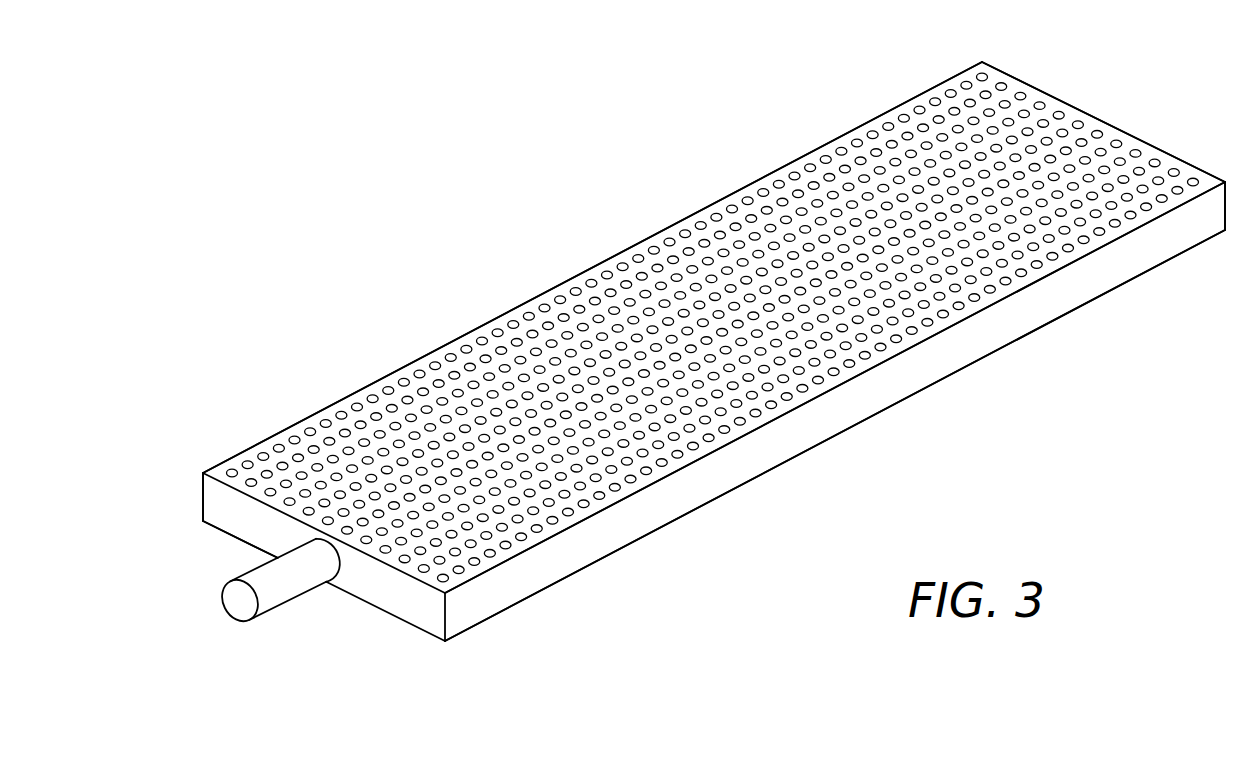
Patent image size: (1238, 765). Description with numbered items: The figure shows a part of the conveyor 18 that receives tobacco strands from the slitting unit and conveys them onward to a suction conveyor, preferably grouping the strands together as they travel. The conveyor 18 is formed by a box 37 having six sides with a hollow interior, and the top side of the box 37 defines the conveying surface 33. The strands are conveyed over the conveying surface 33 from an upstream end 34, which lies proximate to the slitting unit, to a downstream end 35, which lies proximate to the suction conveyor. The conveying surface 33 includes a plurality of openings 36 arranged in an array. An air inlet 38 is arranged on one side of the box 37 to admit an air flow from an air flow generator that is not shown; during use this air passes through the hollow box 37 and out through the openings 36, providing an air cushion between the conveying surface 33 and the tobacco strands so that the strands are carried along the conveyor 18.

The conveyor 18 is at (414, 254).
The conveying surface 33 is at (688, 218).
The upstream end 34 is at (212, 501).
The downstream end 35 is at (1088, 112).
The openings 36 is at (908, 135).
The box 37 is at (1122, 272).
The air inlet 38 is at (283, 595).